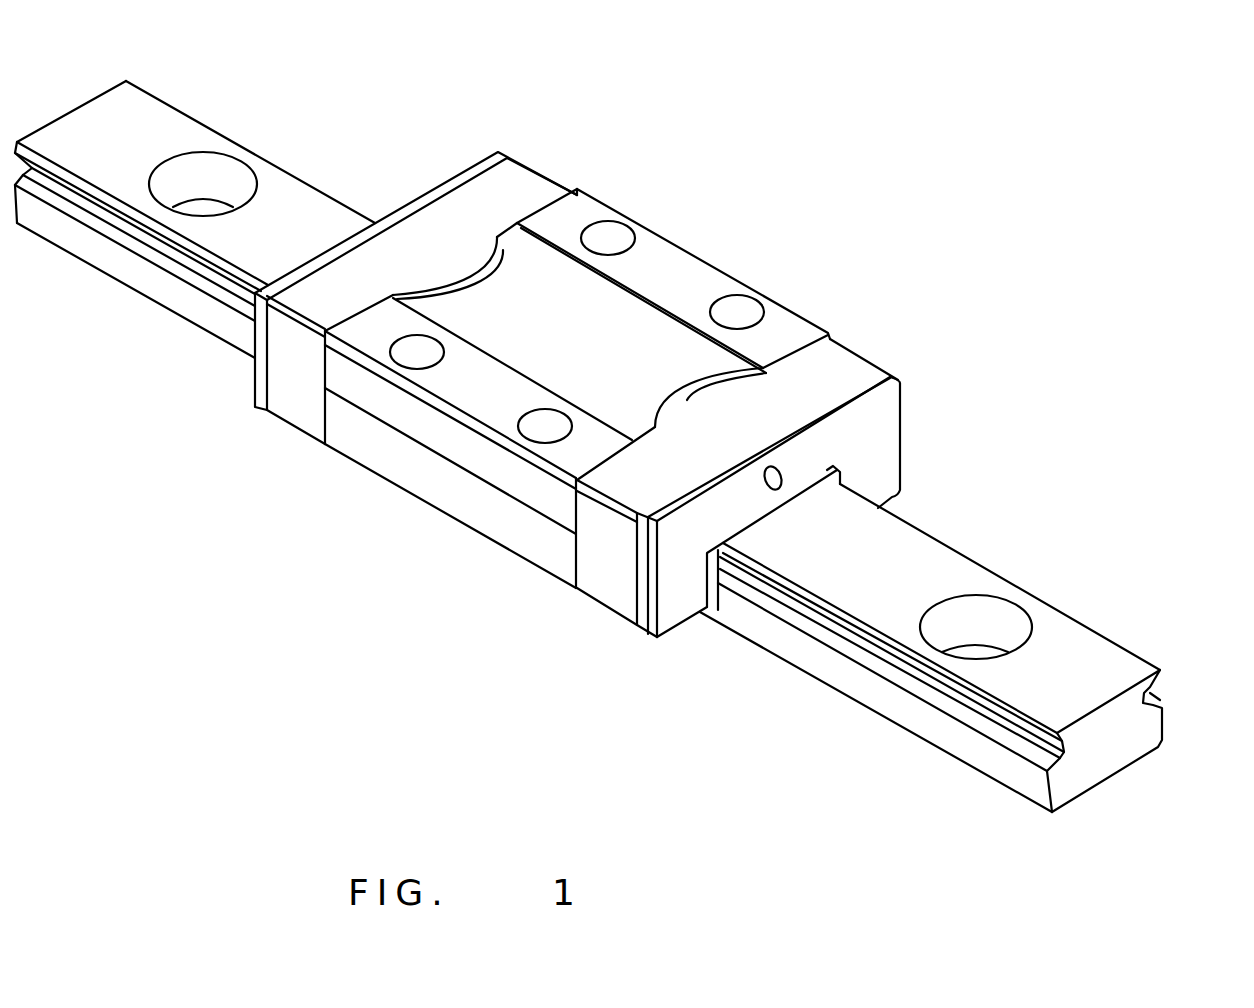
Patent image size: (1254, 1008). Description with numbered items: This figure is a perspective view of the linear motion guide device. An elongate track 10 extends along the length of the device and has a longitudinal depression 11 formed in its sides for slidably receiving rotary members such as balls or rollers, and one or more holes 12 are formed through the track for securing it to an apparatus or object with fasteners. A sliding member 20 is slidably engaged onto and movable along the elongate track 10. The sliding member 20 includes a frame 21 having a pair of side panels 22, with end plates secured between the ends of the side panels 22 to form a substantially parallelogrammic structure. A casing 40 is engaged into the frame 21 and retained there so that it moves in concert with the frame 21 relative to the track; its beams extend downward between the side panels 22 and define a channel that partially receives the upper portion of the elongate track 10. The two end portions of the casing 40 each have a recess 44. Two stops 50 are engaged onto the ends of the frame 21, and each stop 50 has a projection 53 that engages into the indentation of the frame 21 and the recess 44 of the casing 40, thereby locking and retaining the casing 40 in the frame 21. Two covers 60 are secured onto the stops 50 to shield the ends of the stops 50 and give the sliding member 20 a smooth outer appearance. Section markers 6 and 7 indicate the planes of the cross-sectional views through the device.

The elongate track 10 is at (888, 547).
The longitudinal depression 11 is at (1160, 695).
The hole 12 is at (978, 618).
The sliding member 20 is at (588, 153).
The frame 21 is at (529, 582).
The side panel 22 is at (560, 567).
The casing 40 is at (650, 253).
The recess 44 is at (585, 197).
The stop 50 is at (297, 407).
The projection 53 is at (463, 270).
The cover 60 is at (263, 386).
The section line for FIG. 6 is at (728, 267).
The section line for FIG. 7 is at (782, 272).